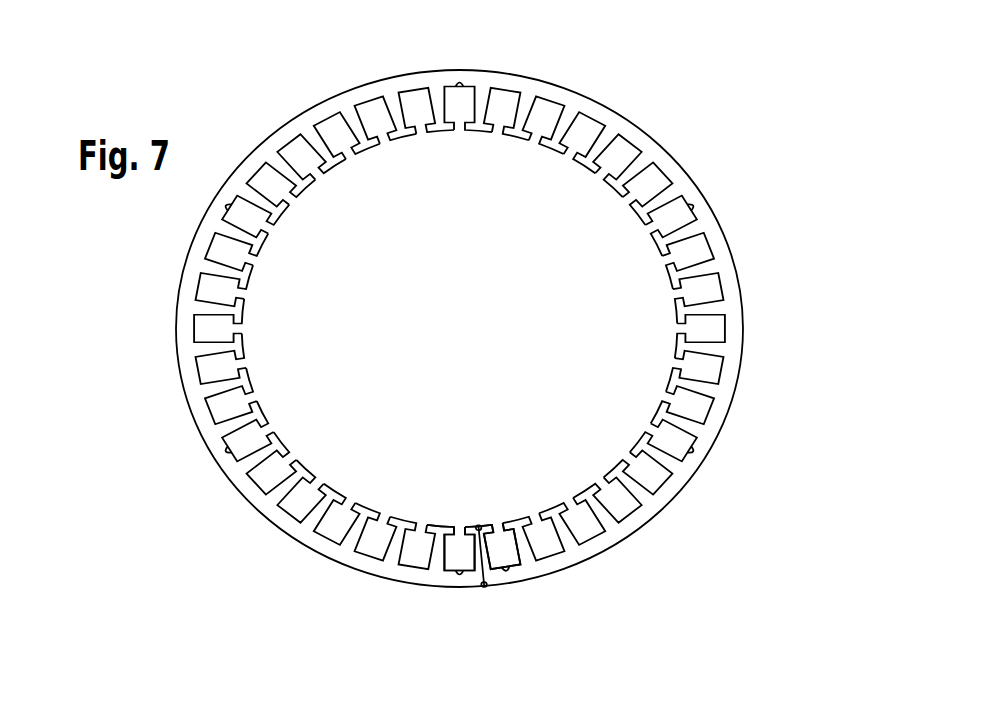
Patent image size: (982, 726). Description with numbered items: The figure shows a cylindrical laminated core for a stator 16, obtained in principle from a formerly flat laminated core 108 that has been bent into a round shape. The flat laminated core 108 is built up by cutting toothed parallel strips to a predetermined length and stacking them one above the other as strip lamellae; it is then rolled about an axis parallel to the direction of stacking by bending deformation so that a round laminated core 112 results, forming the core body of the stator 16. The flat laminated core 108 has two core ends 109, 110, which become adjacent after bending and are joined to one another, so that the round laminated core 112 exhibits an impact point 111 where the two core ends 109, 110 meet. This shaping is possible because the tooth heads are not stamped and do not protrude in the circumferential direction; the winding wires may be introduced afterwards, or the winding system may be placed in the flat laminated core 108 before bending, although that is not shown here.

The stator 16 is at (700, 145).
The flat laminated core 108 is at (283, 134).
The core end 109 is at (480, 576).
The core end 110 is at (486, 577).
The impact point 111 is at (482, 604).
The round laminated core 112 is at (645, 99).